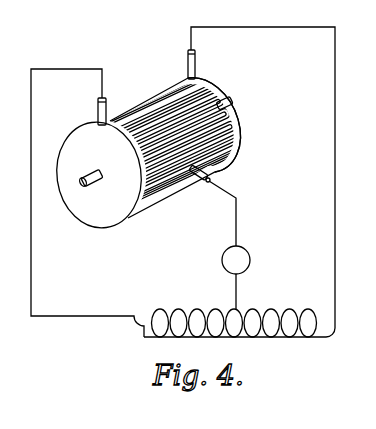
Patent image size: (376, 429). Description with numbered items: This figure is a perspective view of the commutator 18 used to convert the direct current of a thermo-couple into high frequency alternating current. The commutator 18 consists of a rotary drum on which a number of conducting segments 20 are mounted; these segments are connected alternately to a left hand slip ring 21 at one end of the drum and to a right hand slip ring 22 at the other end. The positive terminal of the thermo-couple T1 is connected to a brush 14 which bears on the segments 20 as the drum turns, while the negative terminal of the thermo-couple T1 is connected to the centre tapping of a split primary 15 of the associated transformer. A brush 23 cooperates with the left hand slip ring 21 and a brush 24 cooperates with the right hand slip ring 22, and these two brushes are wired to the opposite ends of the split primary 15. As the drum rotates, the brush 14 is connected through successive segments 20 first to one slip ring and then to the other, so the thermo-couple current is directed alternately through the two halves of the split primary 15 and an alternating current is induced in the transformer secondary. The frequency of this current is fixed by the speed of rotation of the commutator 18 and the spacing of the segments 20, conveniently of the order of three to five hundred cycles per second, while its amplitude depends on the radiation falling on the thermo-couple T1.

The brush 14 is at (208, 184).
The split primary 15 is at (255, 312).
The commutator 18 is at (141, 84).
The conducting segments 20 is at (153, 152).
The left hand slip ring 21 is at (119, 139).
The right hand slip ring 22 is at (228, 134).
The brush 23 is at (97, 108).
The brush 24 is at (196, 61).
The thermo-couple T1 is at (248, 255).